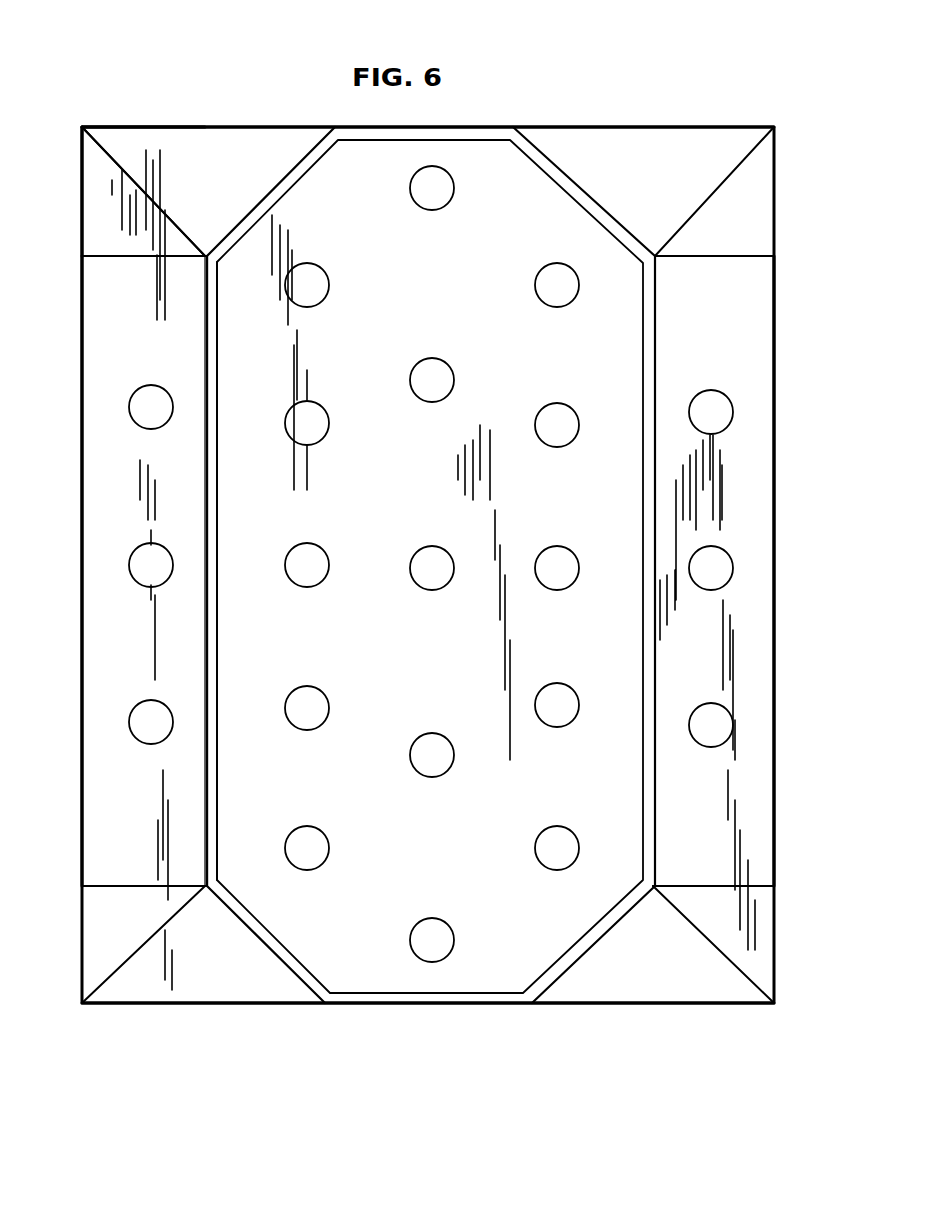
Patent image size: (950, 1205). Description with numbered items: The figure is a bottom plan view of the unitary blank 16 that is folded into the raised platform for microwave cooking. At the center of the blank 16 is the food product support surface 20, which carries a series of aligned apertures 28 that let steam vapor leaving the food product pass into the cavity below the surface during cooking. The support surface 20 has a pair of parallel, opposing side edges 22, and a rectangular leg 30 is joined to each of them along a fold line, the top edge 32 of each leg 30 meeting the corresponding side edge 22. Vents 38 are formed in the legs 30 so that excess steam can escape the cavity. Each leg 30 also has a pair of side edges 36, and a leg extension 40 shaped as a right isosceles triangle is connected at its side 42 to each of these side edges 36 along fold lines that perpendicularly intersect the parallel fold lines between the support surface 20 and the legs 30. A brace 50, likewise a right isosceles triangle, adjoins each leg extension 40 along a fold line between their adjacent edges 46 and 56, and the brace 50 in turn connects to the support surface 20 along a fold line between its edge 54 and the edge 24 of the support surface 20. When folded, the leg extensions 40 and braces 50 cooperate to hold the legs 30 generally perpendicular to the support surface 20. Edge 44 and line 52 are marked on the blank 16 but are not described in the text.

The unitary blank 16 is at (526, 50).
The food product support surface 20 is at (503, 133).
The side edges 22 is at (207, 413).
The edge 24 is at (297, 170).
The apertures 28 is at (565, 266).
The legs 30 is at (750, 665).
The top edge 32 is at (205, 352).
The side edges 36 is at (131, 258).
The vents 38 is at (728, 425).
The leg extensions 40 is at (750, 228).
The side 42 is at (110, 254).
The side edge 44 is at (103, 150).
The edge 46 is at (115, 127).
The braces 50 is at (176, 100).
The score line 52 is at (210, 127).
The edge 54 is at (252, 210).
The edge 56 is at (135, 127).